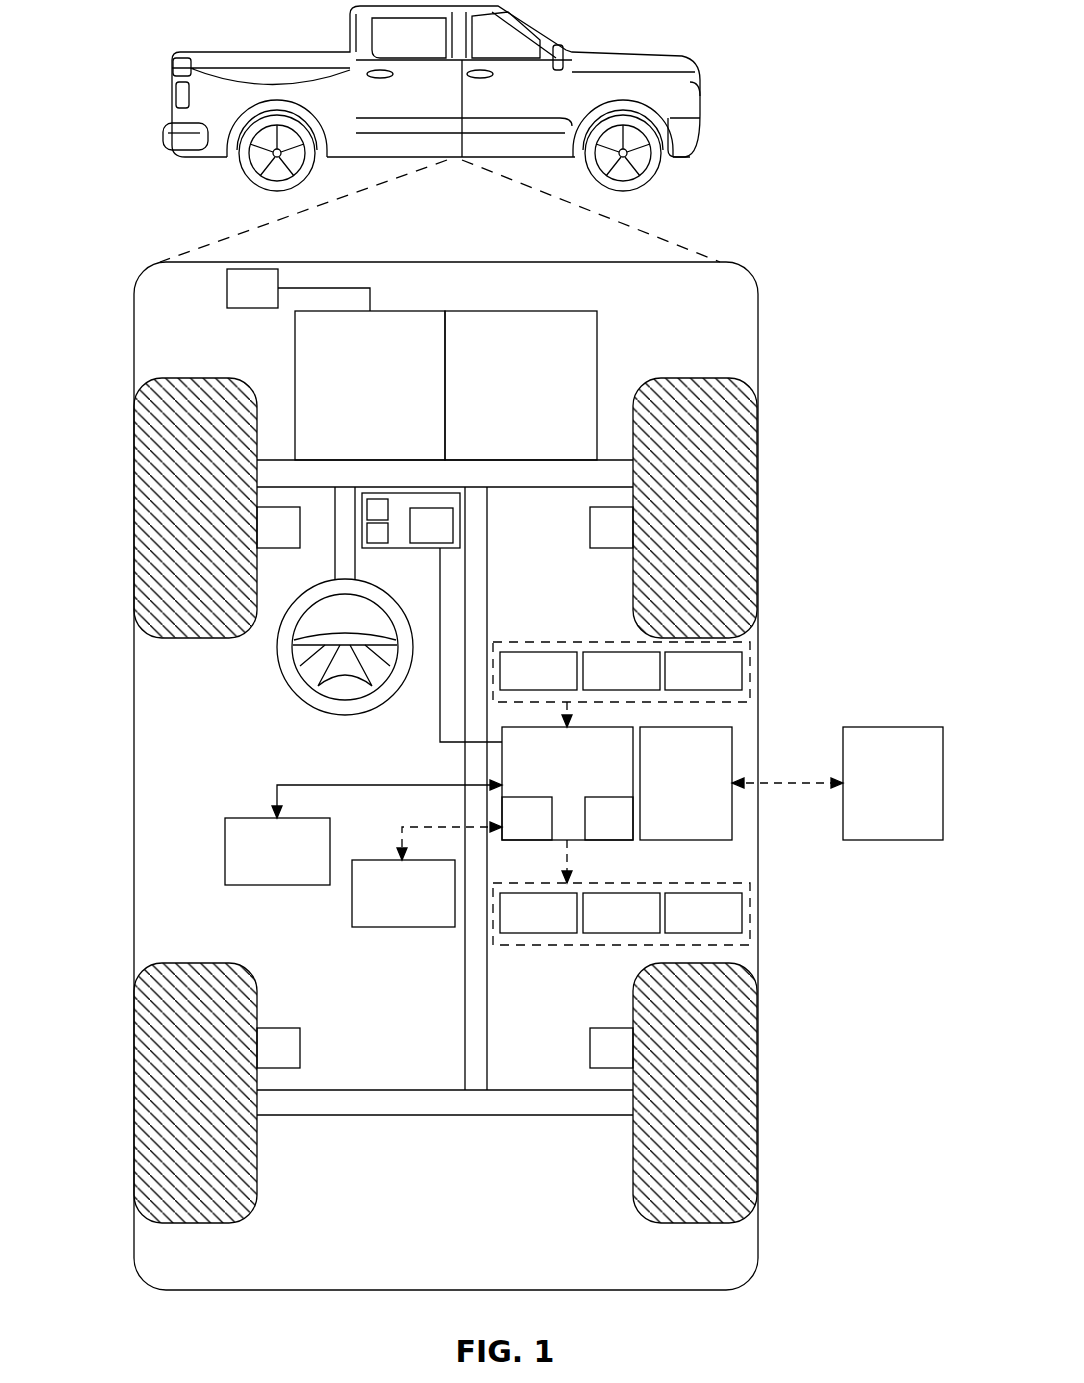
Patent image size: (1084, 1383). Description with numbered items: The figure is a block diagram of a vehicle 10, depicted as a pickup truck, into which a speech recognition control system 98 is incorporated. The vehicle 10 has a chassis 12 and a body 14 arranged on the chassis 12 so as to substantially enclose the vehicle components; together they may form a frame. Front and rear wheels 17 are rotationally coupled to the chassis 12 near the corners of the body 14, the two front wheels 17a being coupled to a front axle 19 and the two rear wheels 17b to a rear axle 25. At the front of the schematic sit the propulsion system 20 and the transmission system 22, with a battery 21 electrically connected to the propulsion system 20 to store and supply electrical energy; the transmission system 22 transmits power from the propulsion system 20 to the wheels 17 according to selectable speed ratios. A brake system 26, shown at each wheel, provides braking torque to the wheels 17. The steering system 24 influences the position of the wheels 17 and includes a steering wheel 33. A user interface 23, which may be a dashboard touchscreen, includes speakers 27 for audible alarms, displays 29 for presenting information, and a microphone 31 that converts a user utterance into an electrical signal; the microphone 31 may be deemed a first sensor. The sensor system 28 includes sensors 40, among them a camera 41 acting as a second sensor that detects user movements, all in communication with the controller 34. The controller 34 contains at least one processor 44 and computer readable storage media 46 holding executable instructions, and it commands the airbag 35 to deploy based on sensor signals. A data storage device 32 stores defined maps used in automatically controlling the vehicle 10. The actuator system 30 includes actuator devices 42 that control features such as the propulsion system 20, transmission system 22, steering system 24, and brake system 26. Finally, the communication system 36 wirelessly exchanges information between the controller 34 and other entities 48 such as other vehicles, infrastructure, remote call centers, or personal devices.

The vehicle 10 is at (640, 52).
The control system 98 is at (456, 772).
The body 14 is at (134, 740).
The wheels 17 is at (448, 788).
The front wheels 17a is at (155, 497).
The rear wheels 17b is at (155, 1090).
The battery 21 is at (262, 268).
The propulsion system 20 is at (356, 397).
The transmission system 22 is at (504, 397).
The front axle 19 is at (557, 488).
The rear axle 25 is at (522, 1088).
The chassis 12 is at (465, 962).
The brake system 26 is at (264, 540).
The steering wheel 33 is at (279, 660).
The user interface 23 is at (369, 508).
The steering system 24 is at (369, 508).
The speakers 27 is at (375, 497).
The displays 29 is at (367, 538).
The microphone 31 is at (418, 538).
The sensor system 28 is at (621, 652).
The sensors 40 is at (524, 684).
The camera 41 is at (689, 684).
The controller 34 is at (567, 783).
The processor 44 is at (513, 831).
The computer readable storage device or media 46 is at (595, 831).
The communication system 36 is at (672, 795).
The other entities 48 is at (879, 795).
The airbag 35 is at (263, 863).
The data storage device 32 is at (389, 905).
The actuator system 30 is at (621, 934).
The actuator devices 42 is at (524, 926).